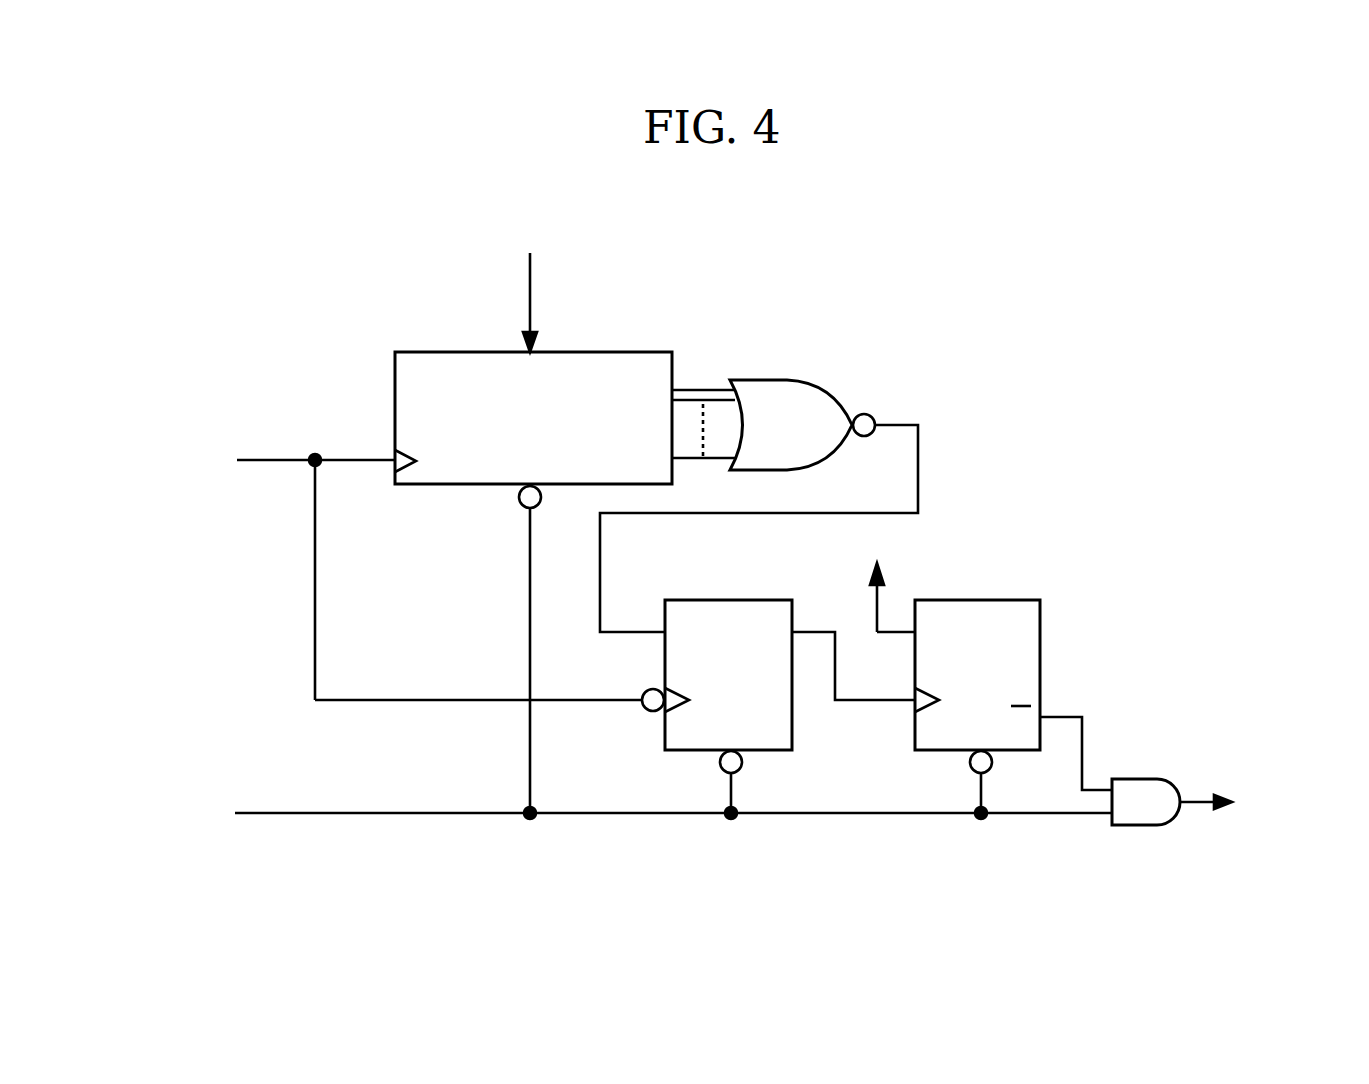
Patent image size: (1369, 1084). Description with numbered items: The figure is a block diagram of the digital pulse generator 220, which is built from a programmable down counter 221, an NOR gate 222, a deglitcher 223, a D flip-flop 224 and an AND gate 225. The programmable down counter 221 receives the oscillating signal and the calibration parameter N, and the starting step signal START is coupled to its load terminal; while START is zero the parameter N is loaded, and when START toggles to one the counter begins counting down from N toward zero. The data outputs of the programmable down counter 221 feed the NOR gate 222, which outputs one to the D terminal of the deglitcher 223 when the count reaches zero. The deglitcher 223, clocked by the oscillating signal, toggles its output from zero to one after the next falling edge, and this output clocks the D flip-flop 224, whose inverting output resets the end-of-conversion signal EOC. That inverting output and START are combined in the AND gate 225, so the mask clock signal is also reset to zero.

The digital pulse generator 220 is at (705, 560).
The programmable down counter 221 is at (582, 352).
The NOR gate 222 is at (765, 380).
The deglitcher 223 is at (687, 600).
The D flip-flop 224 is at (993, 600).
The AND gate 225 is at (1130, 825).